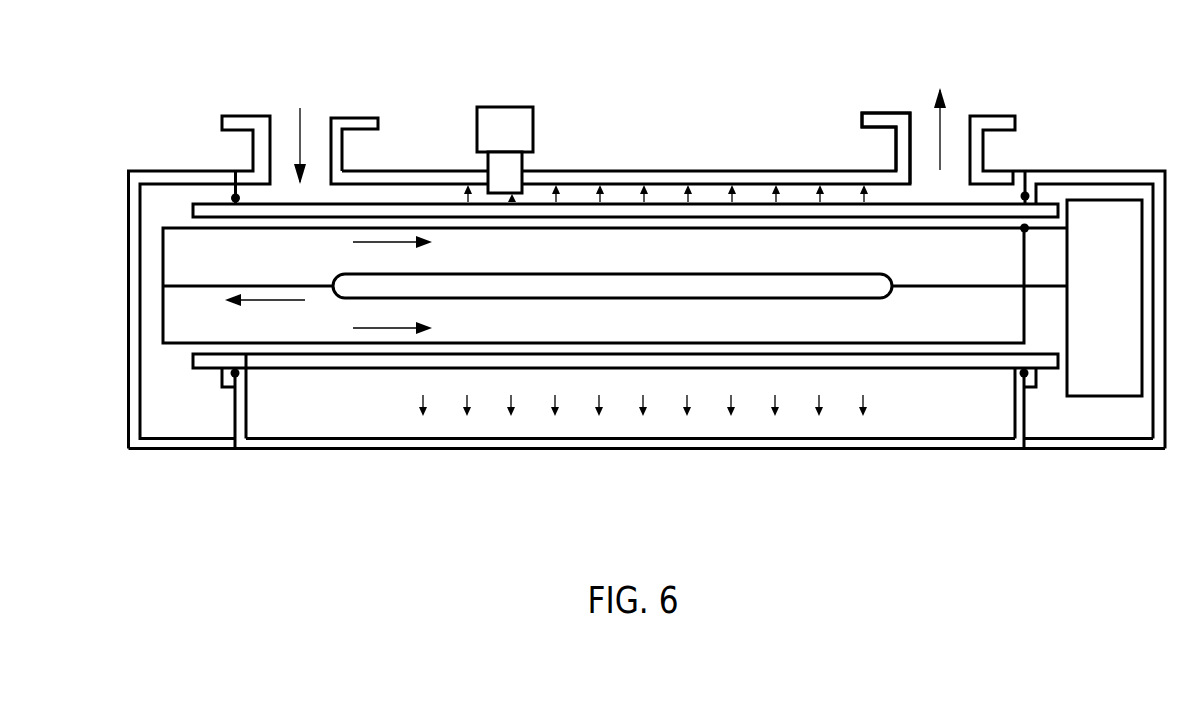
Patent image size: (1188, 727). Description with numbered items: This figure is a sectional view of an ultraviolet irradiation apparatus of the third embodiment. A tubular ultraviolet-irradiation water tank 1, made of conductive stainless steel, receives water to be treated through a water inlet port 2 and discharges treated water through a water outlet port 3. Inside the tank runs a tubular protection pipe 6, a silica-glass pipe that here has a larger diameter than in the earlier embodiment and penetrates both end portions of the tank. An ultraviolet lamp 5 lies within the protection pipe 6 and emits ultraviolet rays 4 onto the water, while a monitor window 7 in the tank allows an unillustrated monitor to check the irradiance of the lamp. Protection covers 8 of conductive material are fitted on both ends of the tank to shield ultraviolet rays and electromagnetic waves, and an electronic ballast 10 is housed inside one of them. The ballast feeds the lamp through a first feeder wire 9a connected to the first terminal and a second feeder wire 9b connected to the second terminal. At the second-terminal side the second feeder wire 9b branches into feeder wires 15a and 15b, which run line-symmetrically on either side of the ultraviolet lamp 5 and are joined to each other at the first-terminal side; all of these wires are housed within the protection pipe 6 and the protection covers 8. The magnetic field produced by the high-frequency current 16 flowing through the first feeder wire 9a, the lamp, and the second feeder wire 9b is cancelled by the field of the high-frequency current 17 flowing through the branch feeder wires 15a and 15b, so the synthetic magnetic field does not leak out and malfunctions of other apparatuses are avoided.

The ultraviolet-irradiation water tank 1 is at (456, 170).
The water inlet port 2 is at (358, 117).
The water outlet port 3 is at (888, 112).
The ultraviolet rays 4 is at (465, 406).
The ultraviolet lamp 5 is at (668, 280).
The protection pipe 6 is at (718, 192).
The monitor window 7 is at (508, 107).
The protection cover 8 is at (166, 170).
The first feeder wire 9a is at (958, 290).
The second feeder wire 9b is at (323, 290).
The electronic ballast 10 is at (1107, 398).
The feeder wire 15a is at (187, 344).
The feeder wire 15b is at (193, 229).
The high-frequency current 16 is at (283, 303).
The high-frequency current 17 is at (384, 240).